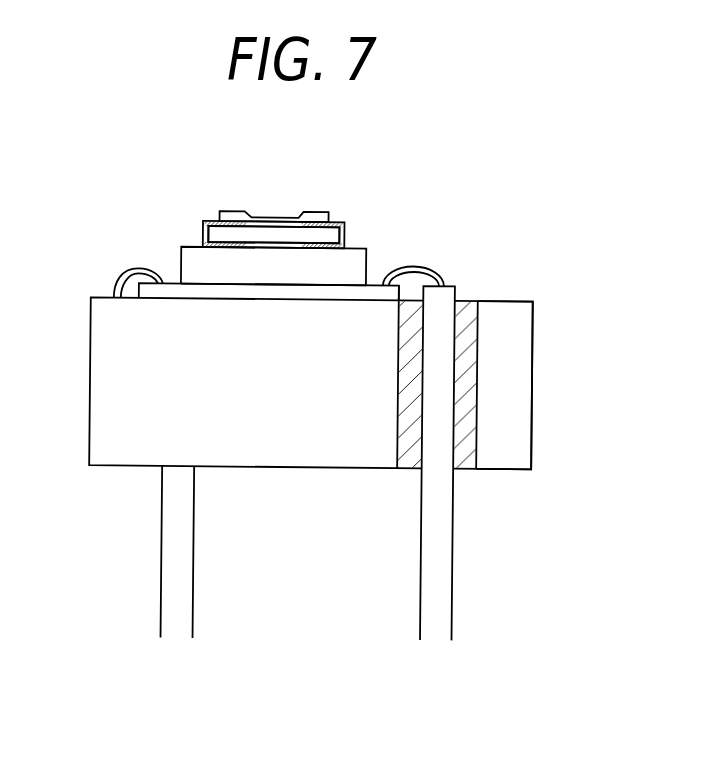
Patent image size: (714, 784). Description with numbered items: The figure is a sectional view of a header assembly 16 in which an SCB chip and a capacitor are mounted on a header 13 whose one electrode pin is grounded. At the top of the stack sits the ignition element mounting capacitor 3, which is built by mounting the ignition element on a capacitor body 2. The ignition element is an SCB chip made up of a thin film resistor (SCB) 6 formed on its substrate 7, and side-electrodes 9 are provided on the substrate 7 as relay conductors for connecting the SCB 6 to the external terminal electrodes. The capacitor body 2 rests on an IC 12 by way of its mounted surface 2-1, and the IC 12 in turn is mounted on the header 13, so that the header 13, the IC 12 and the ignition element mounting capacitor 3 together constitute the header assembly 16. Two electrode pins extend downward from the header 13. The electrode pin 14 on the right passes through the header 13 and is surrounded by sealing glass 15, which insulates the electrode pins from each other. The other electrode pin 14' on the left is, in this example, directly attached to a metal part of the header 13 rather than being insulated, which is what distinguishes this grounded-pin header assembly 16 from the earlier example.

The ignition element mounting capacitor 3 is at (308, 175).
The thin film resistor (SCB) 6 is at (268, 220).
The substrate 7 is at (305, 235).
The side-electrodes 9 is at (343, 223).
The capacitor body 2 is at (333, 267).
The mounted surface of the capacitor 2-1 is at (262, 281).
The IC 12 is at (173, 287).
The header 13 is at (316, 435).
The electrode pin 14 is at (491, 463).
The electrode pin 14' is at (123, 552).
The sealing glass 15 is at (467, 388).
The header assembly 16 is at (477, 282).